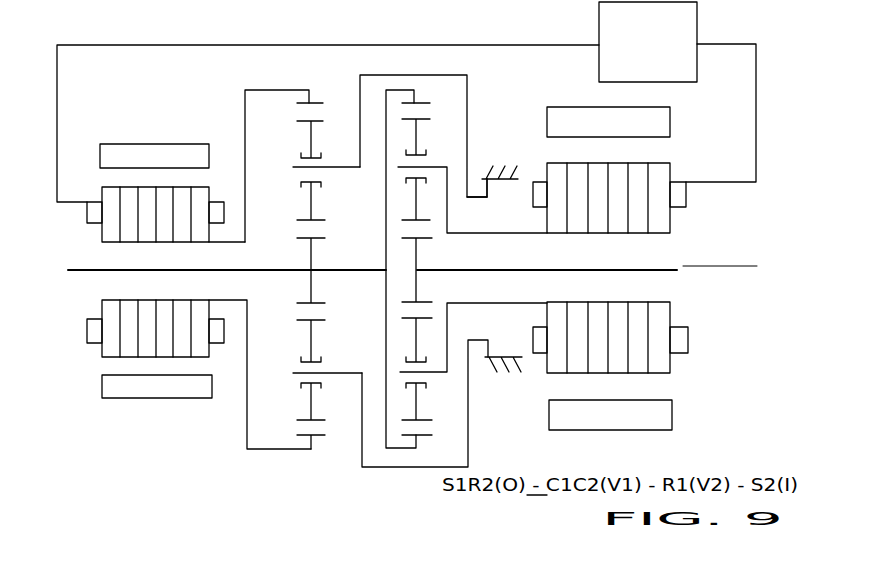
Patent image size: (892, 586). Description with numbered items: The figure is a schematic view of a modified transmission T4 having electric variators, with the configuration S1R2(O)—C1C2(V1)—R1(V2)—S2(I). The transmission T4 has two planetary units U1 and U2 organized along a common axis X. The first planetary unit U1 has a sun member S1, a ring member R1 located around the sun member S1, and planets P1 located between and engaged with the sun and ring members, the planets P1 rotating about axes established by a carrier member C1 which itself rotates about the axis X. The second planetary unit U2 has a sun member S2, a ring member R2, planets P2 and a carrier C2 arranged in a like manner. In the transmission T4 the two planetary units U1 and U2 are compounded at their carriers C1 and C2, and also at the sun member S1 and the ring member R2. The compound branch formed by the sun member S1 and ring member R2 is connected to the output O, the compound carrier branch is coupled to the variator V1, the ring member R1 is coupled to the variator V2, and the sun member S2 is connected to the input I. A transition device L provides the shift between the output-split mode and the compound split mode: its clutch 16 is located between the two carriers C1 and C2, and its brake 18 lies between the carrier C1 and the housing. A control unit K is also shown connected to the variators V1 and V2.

The control unit K is at (660, 46).
The variator V2 is at (100, 252).
The variator V1 is at (680, 242).
The modified transmission T4 is at (138, 411).
The planetary unit U1 is at (272, 458).
The planetary unit U2 is at (396, 478).
The output O is at (92, 275).
The input I is at (635, 270).
The common axis X is at (730, 265).
The ring member R1 is at (319, 103).
The planets P1 is at (309, 206).
The sun member S1 is at (311, 254).
The carrier member C1 is at (333, 168).
The ring member R2 is at (432, 271).
The planets P2 is at (428, 161).
The sun member S2 is at (420, 249).
The carrier C2 is at (447, 310).
The transition device L is at (480, 160).
The clutch 16 is at (486, 199).
The brake 18 is at (495, 180).